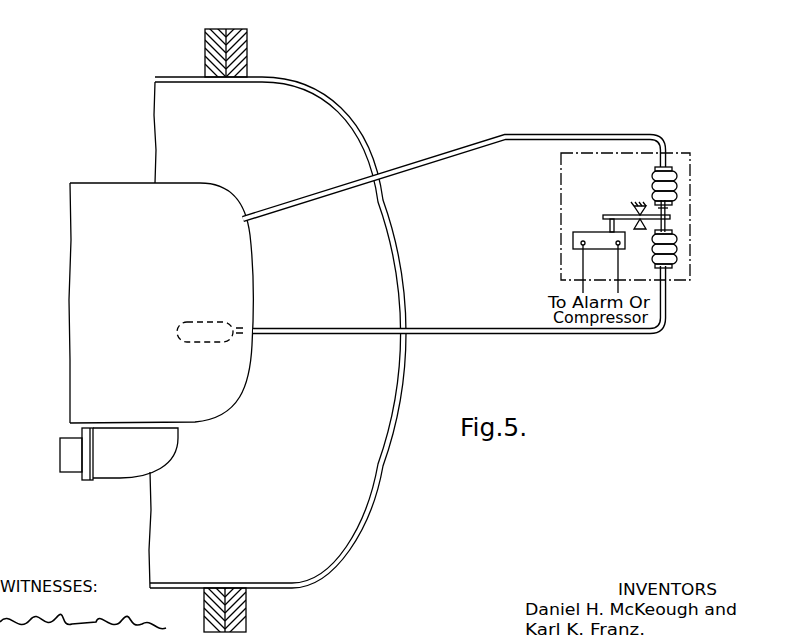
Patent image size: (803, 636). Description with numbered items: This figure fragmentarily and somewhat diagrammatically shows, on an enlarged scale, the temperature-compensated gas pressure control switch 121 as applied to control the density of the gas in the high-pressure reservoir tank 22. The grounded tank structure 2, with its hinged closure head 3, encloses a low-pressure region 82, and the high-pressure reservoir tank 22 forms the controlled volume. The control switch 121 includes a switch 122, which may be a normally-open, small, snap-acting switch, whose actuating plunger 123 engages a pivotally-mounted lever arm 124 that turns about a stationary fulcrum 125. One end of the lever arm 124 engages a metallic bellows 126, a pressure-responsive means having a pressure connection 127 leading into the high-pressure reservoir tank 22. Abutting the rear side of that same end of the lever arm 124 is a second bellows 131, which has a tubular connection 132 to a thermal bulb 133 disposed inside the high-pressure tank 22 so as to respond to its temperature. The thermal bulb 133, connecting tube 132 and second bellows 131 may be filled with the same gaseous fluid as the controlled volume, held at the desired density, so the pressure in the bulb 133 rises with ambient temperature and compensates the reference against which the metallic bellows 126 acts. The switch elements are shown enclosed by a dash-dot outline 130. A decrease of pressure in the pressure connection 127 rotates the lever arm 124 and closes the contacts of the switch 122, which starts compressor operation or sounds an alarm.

The tank structure 2 is at (181, 77).
The hinged closure head 3 is at (332, 104).
The high-pressure reservoir tank 22 is at (205, 183).
The low-pressure region 82 is at (330, 421).
The temperature-compensated gas pressure control switch 121 is at (545, 191).
The switch 122 is at (573, 243).
The actuating plunger 123 is at (609, 227).
The pivotally-mounted lever arm 124 is at (622, 214).
The stationary fulcrum 125 is at (637, 205).
The metallic bellows 126 is at (654, 172).
The pressure connection 127 is at (556, 135).
The switch unit enclosure 130 is at (730, 281).
The second bellows 131 is at (656, 254).
The tubular connection 132 is at (474, 328).
The thermal bulb 133 is at (232, 321).